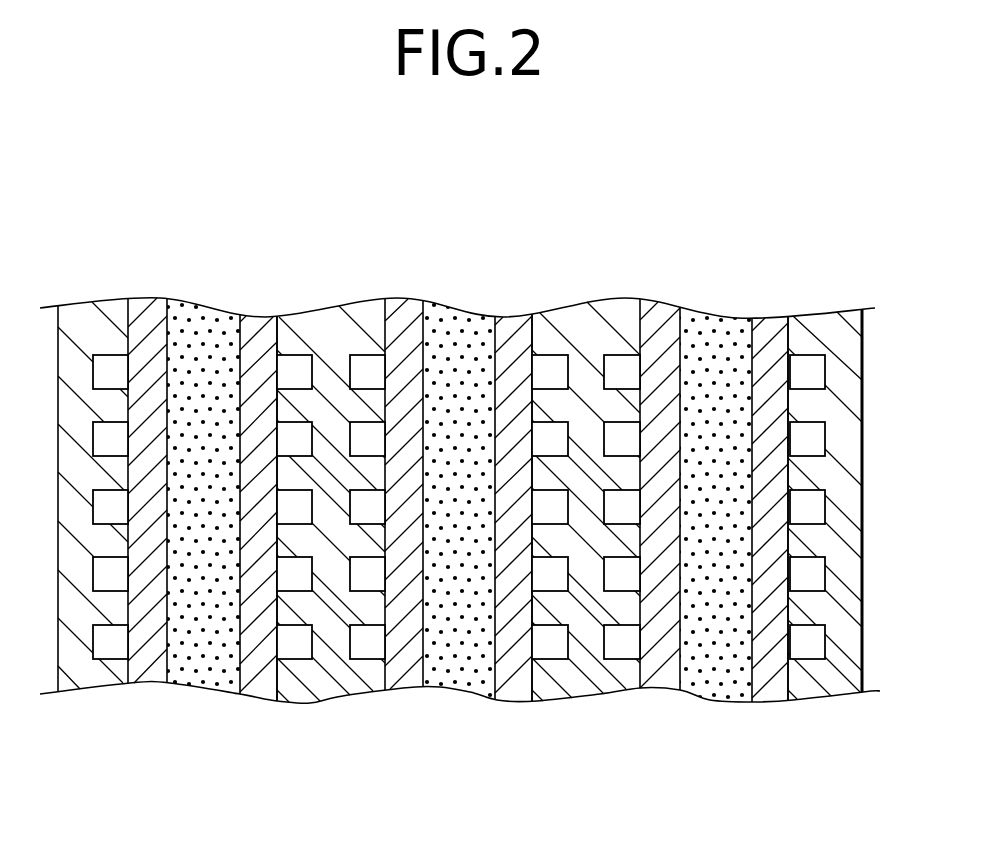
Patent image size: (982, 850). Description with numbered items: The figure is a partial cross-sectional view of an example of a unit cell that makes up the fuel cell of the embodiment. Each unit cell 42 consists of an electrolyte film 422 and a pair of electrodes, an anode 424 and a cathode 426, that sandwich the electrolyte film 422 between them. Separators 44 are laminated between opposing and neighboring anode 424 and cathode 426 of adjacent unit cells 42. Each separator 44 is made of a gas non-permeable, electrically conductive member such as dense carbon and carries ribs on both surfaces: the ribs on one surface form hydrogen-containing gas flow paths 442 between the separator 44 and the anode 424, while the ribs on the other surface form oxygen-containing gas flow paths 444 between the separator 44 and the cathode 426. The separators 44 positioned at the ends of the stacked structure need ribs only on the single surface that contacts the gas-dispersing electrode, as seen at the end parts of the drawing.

The unit cell 42 is at (458, 563).
The separator 44 is at (848, 668).
The electrolyte film 422 is at (707, 662).
The anode 424 is at (768, 658).
The cathode 426 is at (662, 660).
The hydrogen-containing gas flow paths 442 is at (298, 440).
The oxygen-containing gas flow paths 444 is at (372, 440).